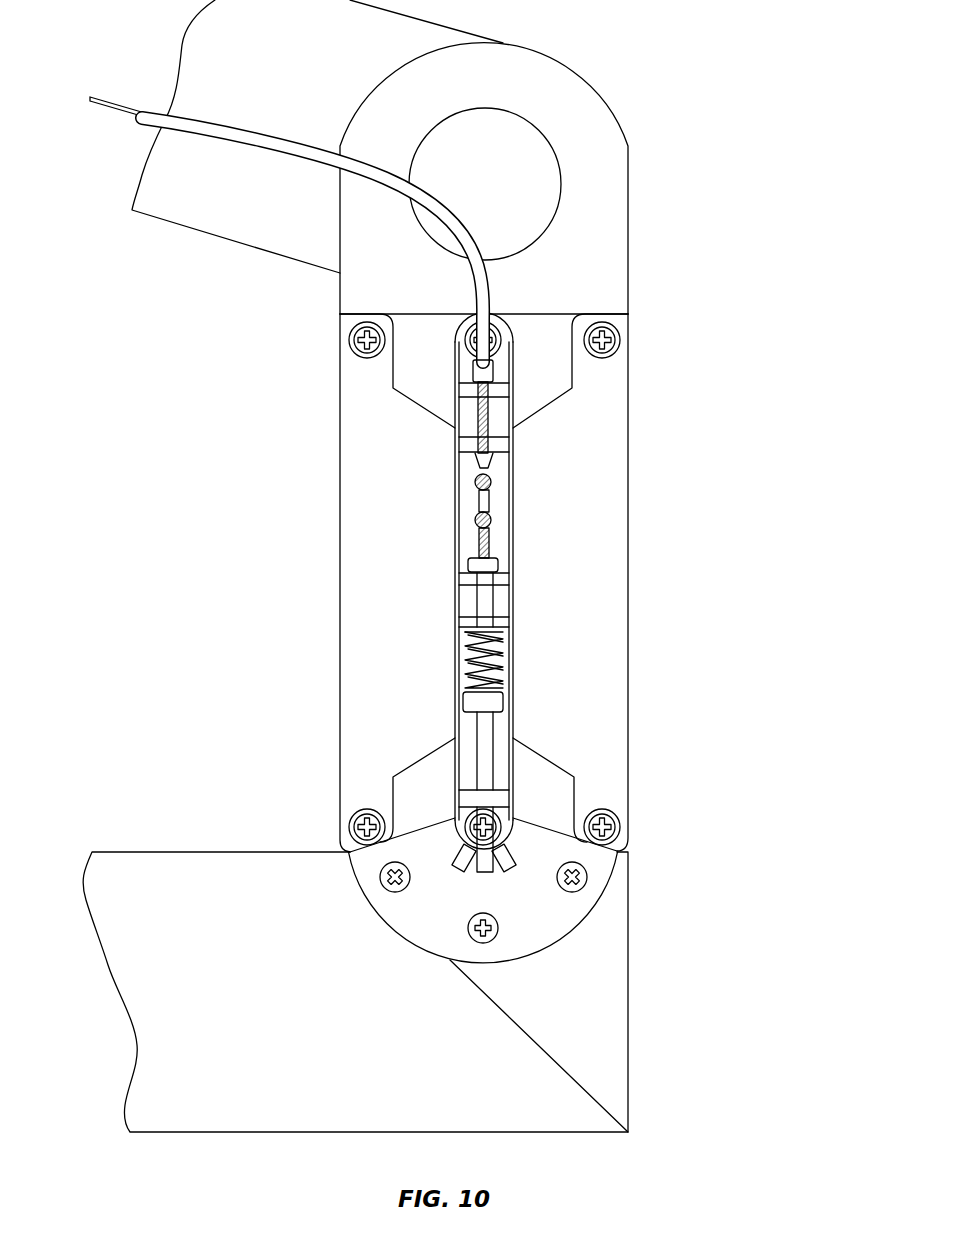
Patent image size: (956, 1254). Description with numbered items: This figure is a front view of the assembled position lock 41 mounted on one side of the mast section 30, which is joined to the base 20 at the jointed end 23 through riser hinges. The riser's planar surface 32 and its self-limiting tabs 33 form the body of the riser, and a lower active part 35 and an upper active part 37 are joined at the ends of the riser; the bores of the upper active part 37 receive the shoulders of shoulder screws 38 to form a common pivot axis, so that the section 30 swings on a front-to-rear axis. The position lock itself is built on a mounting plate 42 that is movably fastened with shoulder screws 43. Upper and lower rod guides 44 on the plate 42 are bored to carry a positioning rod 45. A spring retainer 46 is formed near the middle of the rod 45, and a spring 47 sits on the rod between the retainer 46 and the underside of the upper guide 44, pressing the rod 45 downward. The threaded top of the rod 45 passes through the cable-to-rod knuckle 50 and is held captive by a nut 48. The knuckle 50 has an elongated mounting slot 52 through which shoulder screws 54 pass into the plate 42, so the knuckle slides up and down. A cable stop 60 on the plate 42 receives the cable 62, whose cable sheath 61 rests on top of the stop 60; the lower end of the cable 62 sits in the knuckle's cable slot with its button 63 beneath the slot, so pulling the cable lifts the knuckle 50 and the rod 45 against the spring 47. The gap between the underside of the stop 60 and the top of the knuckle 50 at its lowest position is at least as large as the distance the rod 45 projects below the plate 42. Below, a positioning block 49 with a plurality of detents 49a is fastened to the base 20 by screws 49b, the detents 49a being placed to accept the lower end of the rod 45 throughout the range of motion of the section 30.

The base 20 is at (600, 1063).
The jointed end 23 is at (597, 178).
The mast section 30 is at (640, 583).
The planar surface 32 is at (337, 350).
The self-limiting tab 33 is at (410, 567).
The lower active part 35 is at (352, 788).
The upper active part 37 is at (347, 327).
The shoulder screw 38 is at (372, 315).
The position lock assembly 41 is at (455, 500).
The mounting plate 42 is at (502, 725).
The shoulder screw 43 is at (497, 343).
The rod guide 44 is at (503, 622).
The positioning rod 45 is at (485, 602).
The spring retainer 46 is at (473, 702).
The spring 47 is at (500, 658).
The nut 48 is at (512, 558).
The positioning block 49 is at (548, 922).
The detent 49a is at (517, 867).
The screw 49b is at (381, 880).
The cable-to-rod knuckle 50 is at (468, 473).
The mounting slot 52 is at (487, 538).
The shoulder screw 54 is at (495, 483).
The cable stop 60 is at (465, 390).
The cable sheath 61 is at (447, 200).
The cable 62 is at (487, 417).
The button 63 is at (512, 467).